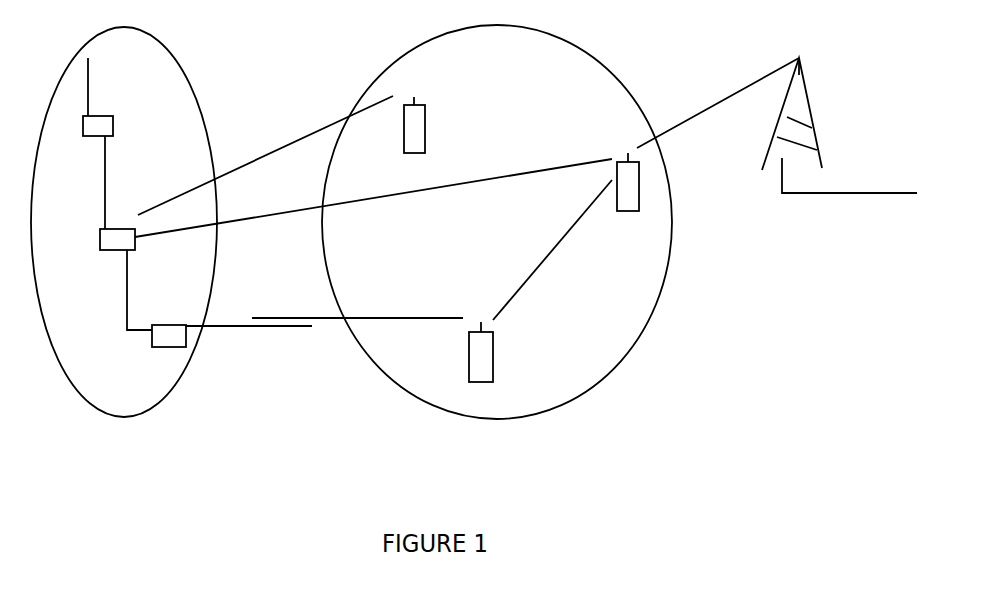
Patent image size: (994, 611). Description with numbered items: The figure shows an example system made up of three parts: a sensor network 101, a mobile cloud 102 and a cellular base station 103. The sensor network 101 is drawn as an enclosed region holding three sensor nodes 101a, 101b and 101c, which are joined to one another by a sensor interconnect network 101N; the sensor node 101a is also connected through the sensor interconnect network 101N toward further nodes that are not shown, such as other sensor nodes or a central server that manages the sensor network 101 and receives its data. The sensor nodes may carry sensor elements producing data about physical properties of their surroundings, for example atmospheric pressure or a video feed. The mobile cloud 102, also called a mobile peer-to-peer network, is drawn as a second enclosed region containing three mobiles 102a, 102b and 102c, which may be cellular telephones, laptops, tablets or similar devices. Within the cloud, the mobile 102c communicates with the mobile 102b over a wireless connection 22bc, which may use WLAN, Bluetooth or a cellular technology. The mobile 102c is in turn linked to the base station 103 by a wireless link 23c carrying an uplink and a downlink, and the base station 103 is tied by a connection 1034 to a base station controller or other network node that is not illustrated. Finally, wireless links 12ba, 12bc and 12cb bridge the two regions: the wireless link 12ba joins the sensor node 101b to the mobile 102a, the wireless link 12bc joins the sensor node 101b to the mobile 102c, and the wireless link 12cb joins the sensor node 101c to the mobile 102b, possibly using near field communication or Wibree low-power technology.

The sensor network 101 is at (124, 222).
The sensor interconnect network 101N is at (106, 194).
The sensor node 101a is at (118, 126).
The sensor node 101b is at (96, 239).
The sensor node 101c is at (164, 345).
The mobile cloud 102 is at (497, 222).
The mobile 102a is at (435, 125).
The mobile 102b is at (502, 352).
The mobile 102c is at (631, 193).
The cellular base station 103 is at (801, 114).
The connection 1034 is at (849, 187).
The wireless link 12ba is at (223, 174).
The wireless link 12bc is at (440, 193).
The wireless link 12cb is at (302, 322).
The wireless connection 22bc is at (550, 253).
The wireless link 23c is at (684, 136).